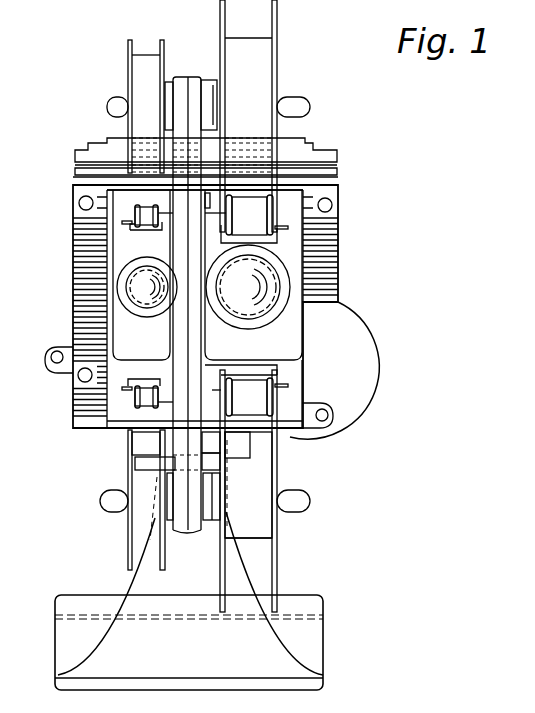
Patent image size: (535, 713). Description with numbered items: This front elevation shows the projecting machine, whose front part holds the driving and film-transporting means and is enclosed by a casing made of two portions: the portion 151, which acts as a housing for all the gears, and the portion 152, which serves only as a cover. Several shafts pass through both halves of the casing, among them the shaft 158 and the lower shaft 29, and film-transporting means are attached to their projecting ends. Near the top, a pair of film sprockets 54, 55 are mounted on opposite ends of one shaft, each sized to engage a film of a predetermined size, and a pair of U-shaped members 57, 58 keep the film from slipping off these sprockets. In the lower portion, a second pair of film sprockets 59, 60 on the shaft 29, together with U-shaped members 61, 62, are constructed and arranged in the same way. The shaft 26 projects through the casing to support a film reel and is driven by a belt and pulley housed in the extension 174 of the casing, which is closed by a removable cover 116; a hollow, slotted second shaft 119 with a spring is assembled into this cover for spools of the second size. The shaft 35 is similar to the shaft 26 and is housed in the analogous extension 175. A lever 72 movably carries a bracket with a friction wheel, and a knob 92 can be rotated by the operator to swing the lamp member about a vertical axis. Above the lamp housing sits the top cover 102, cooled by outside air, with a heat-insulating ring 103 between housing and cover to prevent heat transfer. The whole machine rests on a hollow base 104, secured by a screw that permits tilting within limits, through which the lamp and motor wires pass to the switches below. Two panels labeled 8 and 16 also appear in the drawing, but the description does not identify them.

The first cylinder panel 8 is at (145, 275).
The second cylinder panel 16 is at (253, 275).
The shaft 26 is at (110, 97).
The shaft 29 is at (165, 407).
The shaft 35 is at (118, 502).
The film sprocket 54 is at (133, 213).
The film sprocket 55 is at (255, 215).
The U-shaped member 57 is at (132, 230).
The U-shaped member 58 is at (223, 240).
The film sprocket 59 is at (133, 398).
The film sprocket 60 is at (255, 405).
The U-shaped member 61 is at (130, 385).
The U-shaped member 62 is at (277, 370).
The lever 72 is at (50, 355).
The knob 92 is at (140, 463).
The top cover 102 is at (80, 153).
The ring 103 is at (78, 190).
The hollow base 104 is at (150, 582).
The cover 116 is at (196, 80).
The second shaft 119 is at (310, 100).
The casing portion 151 is at (178, 233).
The casing portion 152 is at (195, 347).
The shaft 158 is at (163, 207).
The extension 174 is at (183, 77).
The extension 175 is at (183, 530).